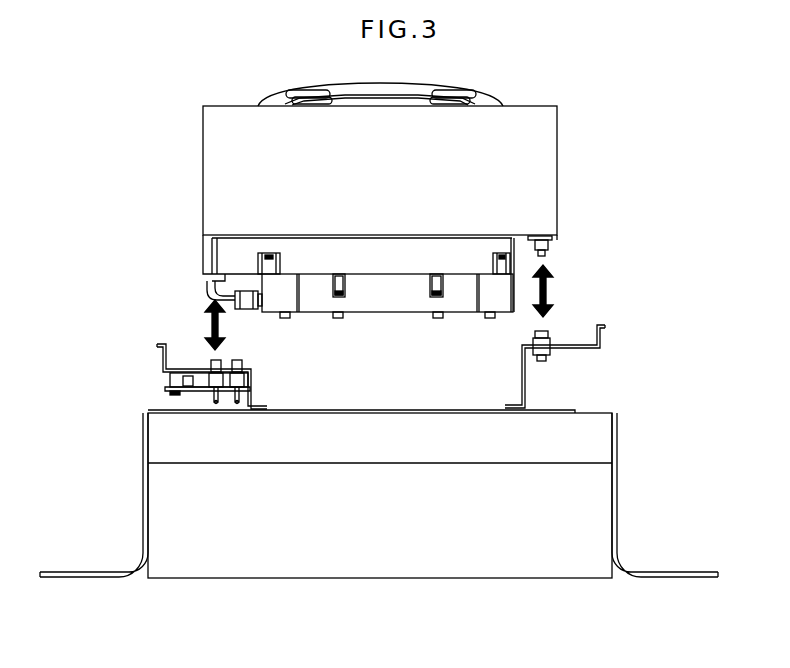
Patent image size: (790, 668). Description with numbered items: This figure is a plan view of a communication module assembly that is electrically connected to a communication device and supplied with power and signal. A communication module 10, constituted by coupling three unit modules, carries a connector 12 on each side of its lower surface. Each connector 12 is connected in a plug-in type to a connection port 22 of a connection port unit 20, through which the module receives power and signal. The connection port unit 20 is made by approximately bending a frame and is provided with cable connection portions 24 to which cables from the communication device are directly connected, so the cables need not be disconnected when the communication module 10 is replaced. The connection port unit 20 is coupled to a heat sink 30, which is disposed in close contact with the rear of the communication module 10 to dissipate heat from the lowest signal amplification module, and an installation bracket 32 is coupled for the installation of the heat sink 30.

The communication module 10 is at (226, 166).
The connector 12 is at (213, 279).
The connection port unit 20 is at (163, 358).
The connection port 22 is at (213, 358).
The cable connection portion 24 is at (236, 400).
The heat sink 30 is at (305, 548).
The installation bracket 32 is at (146, 497).